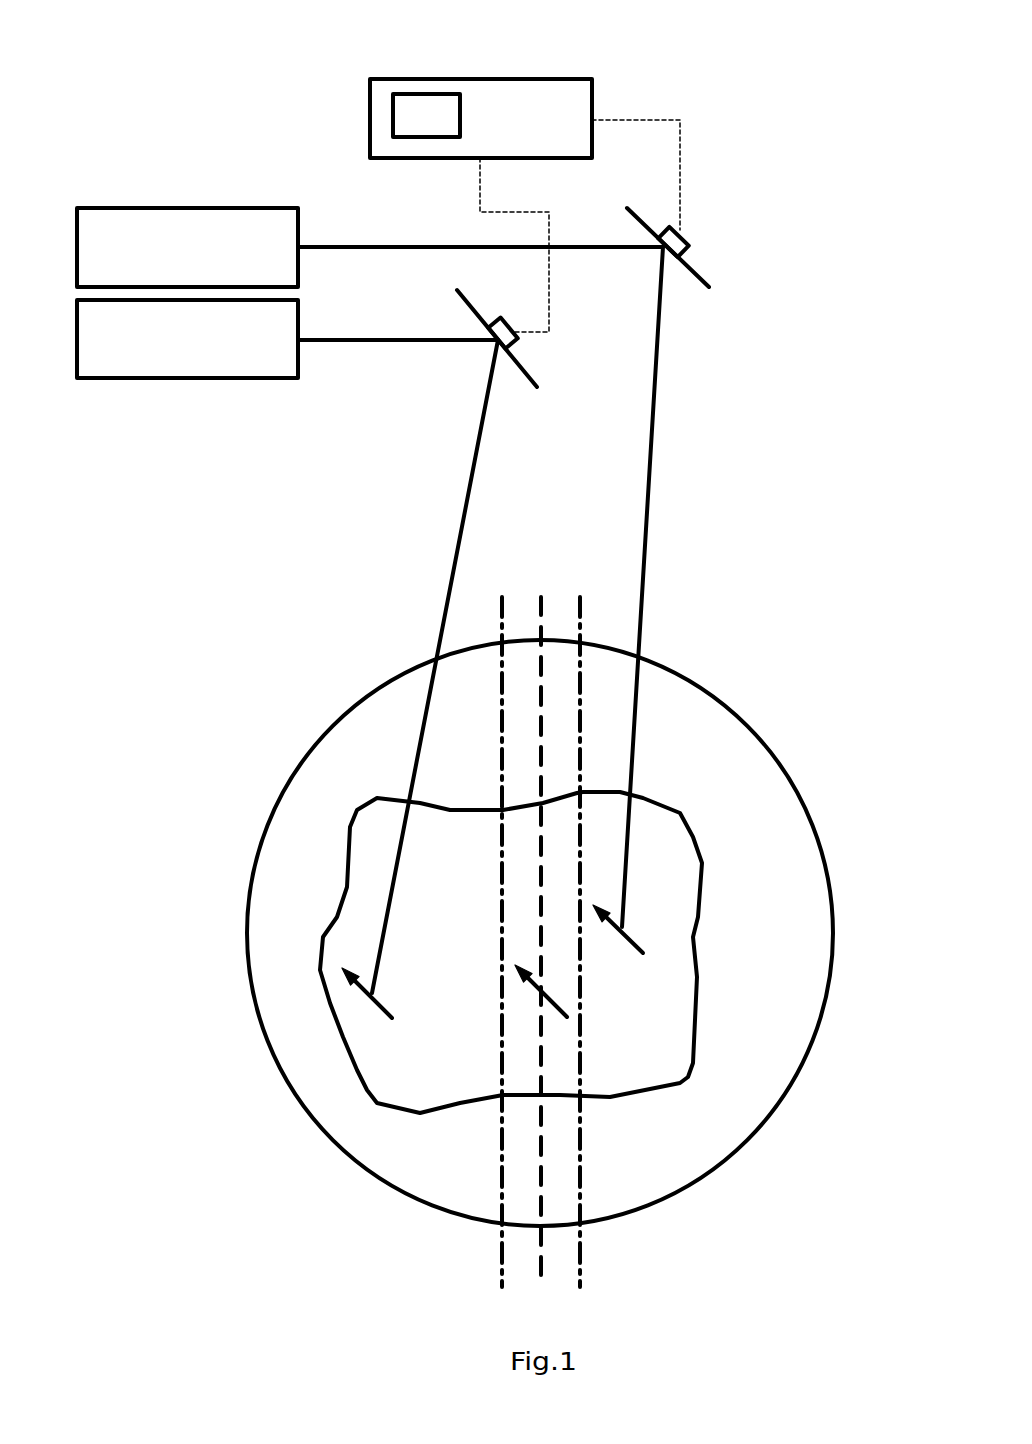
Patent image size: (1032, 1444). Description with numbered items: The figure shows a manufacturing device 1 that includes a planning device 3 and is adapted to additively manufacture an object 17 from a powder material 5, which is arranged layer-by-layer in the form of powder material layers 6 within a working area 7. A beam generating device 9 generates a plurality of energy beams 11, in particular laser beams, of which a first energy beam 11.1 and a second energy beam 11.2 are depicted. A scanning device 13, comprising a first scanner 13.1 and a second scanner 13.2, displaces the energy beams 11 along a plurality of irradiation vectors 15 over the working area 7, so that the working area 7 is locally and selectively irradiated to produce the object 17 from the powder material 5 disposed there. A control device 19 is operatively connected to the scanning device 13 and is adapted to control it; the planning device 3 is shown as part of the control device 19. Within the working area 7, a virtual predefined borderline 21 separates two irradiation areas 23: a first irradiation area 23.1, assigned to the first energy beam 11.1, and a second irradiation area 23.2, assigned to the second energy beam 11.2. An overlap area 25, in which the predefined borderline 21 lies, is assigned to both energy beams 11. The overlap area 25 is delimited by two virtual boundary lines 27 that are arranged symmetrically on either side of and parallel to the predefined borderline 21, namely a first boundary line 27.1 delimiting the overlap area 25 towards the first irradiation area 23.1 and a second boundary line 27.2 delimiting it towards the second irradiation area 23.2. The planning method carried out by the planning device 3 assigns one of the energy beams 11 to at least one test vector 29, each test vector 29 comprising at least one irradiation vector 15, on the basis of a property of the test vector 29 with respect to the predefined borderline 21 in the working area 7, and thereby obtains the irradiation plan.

The manufacturing device 1 is at (731, 48).
The planning device 3 is at (425, 95).
The powder material 5 is at (800, 868).
The powder material layers 6 is at (797, 955).
The working area 7 is at (838, 1020).
The beam generating device 9 is at (79, 158).
The energy beams 11 is at (534, 620).
The first energy beam 11.1 is at (465, 502).
The second energy beam 11.2 is at (650, 498).
The scanning device 13 is at (637, 297).
The first scanner 13.1 is at (520, 362).
The second scanner 13.2 is at (692, 263).
The irradiation vectors 15 is at (516, 944).
The object 17 is at (722, 840).
The control device 19 is at (510, 80).
The predefined borderline 21 is at (542, 600).
The irradiation areas 23 is at (536, 762).
The first irradiation area 23.1 is at (404, 775).
The second irradiation area 23.2 is at (740, 775).
The overlap area 25 is at (516, 720).
The boundary lines 27 is at (552, 941).
The first boundary line 27.1 is at (493, 605).
The second boundary line 27.2 is at (583, 605).
The test vector 29 is at (382, 1000).